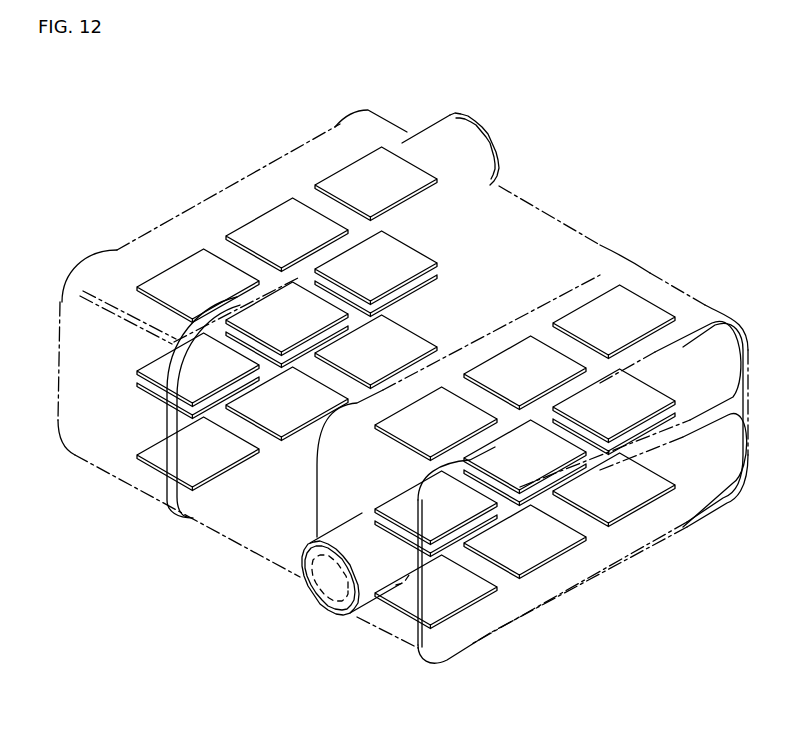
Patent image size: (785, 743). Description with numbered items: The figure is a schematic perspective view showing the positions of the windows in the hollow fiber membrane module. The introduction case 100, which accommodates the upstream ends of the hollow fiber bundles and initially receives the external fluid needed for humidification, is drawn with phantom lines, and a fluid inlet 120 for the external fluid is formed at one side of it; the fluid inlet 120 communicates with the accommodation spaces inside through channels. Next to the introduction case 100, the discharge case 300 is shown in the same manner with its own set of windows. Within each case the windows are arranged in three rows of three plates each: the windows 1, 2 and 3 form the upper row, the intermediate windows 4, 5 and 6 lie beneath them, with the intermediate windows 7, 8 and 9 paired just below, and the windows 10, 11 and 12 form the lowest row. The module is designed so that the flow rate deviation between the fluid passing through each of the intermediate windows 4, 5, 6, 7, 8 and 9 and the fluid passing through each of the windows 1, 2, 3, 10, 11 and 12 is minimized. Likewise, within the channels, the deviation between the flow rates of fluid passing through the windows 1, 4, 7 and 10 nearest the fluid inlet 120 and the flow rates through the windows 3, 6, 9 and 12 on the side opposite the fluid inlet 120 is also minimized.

The introduction case 100 is at (525, 616).
The fluid inlet 120 is at (333, 597).
The discharge case 300 is at (145, 232).
The window 1 is at (317, 355).
The window 2 is at (406, 304).
The window 3 is at (495, 253).
The intermediate window 4 is at (317, 439).
The intermediate window 5 is at (406, 388).
The intermediate window 6 is at (495, 337).
The intermediate window 7 is at (317, 467).
The intermediate window 8 is at (406, 416).
The intermediate window 9 is at (495, 365).
The window 10 is at (317, 523).
The window 11 is at (406, 473).
The window 12 is at (495, 421).